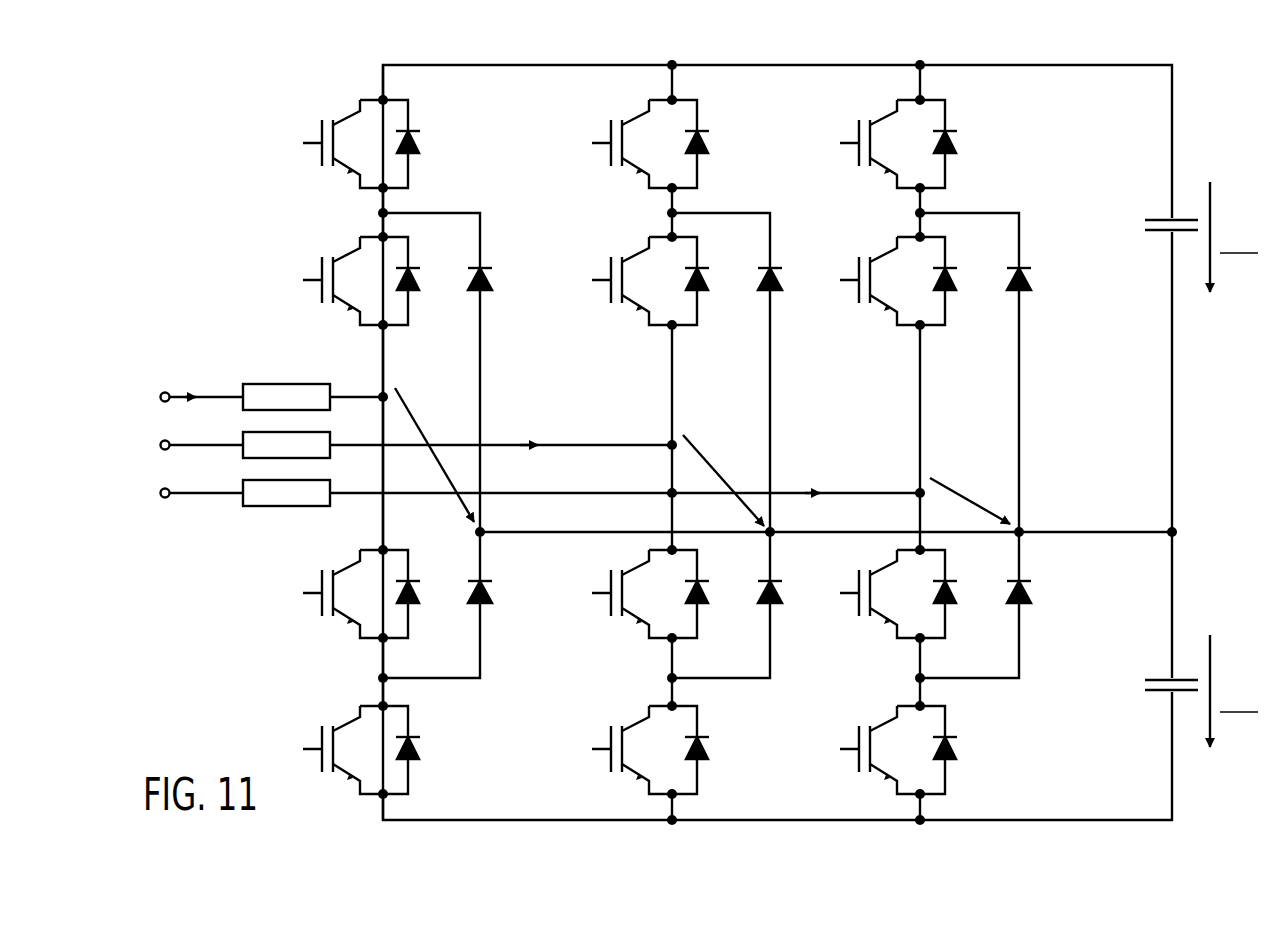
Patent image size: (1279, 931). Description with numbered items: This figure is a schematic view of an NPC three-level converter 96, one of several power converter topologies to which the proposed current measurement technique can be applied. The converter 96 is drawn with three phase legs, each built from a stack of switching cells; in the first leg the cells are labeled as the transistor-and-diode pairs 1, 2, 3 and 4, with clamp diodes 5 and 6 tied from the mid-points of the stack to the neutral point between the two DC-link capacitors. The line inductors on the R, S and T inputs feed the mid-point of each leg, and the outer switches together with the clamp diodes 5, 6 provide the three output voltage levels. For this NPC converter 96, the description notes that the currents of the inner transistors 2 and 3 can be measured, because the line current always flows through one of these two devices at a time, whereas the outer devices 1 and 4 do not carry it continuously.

The NPC three-level converter 96 is at (1195, 66).
The first switch cell (transistor T1 with anti-parallel diode D1) 1 is at (361, 144).
The second switch cell (transistor T2 with anti-parallel diode D2) 2 is at (361, 281).
The third switch cell (transistor T3 with anti-parallel diode D3) 3 is at (361, 594).
The fourth switch cell (transistor T4 with anti-parallel diode D4) 4 is at (361, 750).
The clamp diode D5 5 is at (494, 283).
The clamp diode D6 6 is at (494, 596).